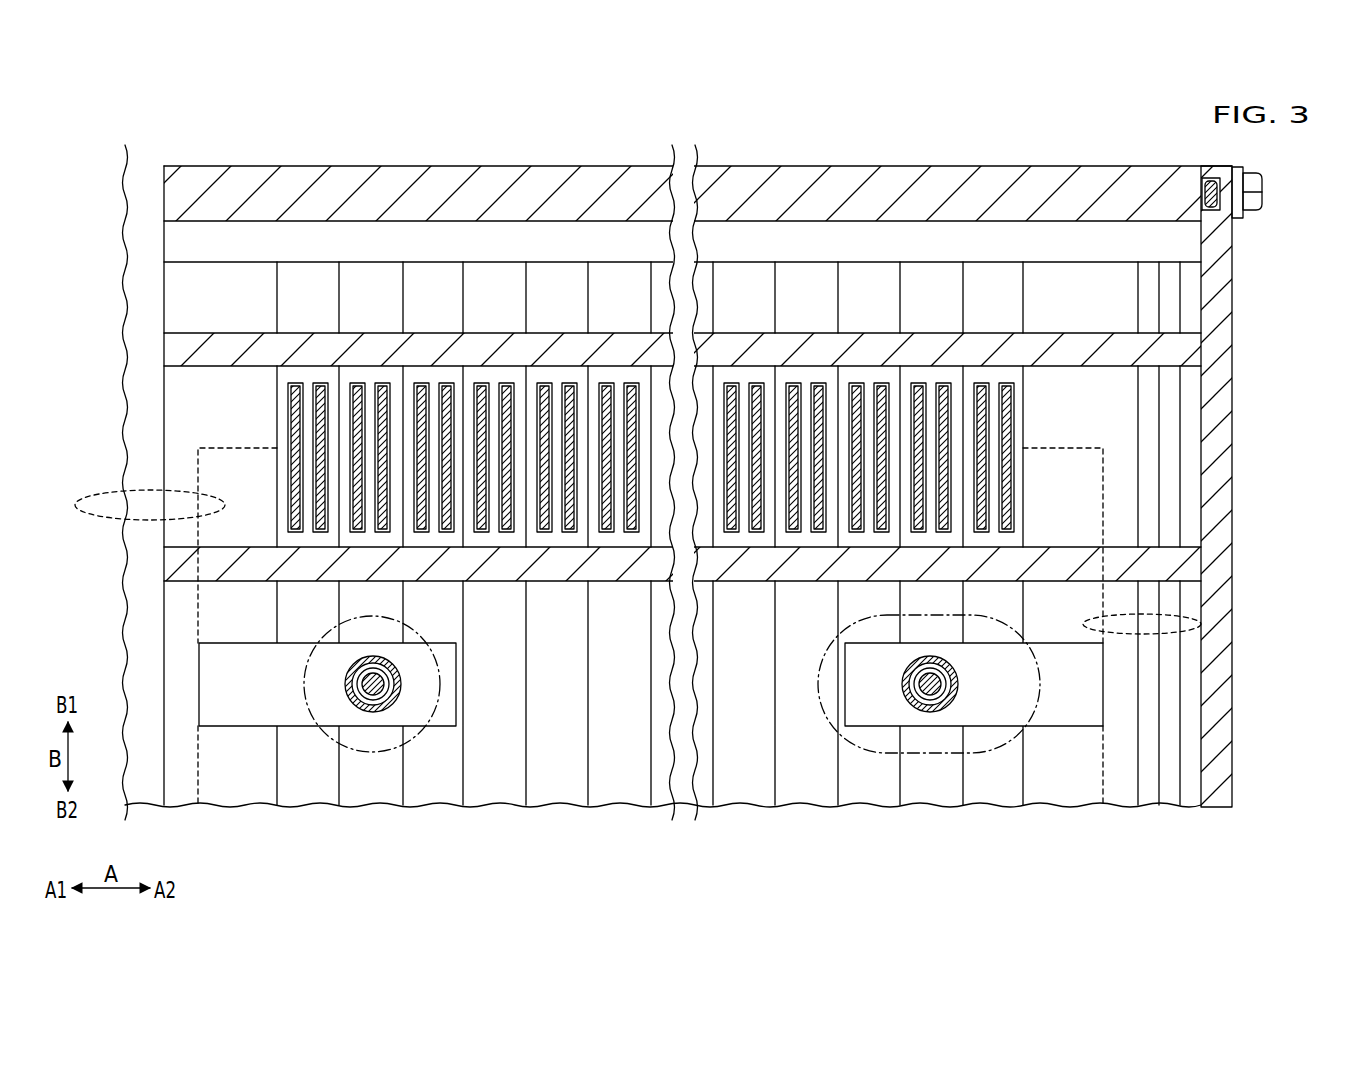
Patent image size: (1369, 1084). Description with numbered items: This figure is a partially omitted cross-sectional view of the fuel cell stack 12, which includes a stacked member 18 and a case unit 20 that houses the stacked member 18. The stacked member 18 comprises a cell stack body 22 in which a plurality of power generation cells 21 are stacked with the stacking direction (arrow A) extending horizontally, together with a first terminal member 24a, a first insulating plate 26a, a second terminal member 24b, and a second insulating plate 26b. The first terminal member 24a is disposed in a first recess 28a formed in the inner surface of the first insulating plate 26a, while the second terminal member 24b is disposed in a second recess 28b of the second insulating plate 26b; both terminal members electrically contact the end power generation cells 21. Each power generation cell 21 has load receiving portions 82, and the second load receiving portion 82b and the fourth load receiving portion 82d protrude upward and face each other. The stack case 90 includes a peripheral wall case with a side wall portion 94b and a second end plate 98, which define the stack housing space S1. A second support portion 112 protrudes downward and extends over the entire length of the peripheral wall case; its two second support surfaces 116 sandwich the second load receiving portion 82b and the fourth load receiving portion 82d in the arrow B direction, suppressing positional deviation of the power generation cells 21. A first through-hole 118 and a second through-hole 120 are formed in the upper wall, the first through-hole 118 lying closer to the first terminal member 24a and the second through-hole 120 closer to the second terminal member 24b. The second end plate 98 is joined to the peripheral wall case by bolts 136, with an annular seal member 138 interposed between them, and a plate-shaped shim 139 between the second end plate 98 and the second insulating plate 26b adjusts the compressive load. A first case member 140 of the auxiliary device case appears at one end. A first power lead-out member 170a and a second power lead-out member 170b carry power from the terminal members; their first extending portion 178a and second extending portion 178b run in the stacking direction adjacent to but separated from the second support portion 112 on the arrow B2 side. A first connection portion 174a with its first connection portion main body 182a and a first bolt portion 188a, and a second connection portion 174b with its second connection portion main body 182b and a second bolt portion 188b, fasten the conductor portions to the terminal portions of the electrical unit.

The fuel cell stack 12 is at (1063, 146).
The stacked member 18 is at (898, 234).
The case unit 20 is at (1259, 685).
The power generation cell 21 is at (625, 790).
The cell stack body 22 is at (801, 258).
The first terminal member 24a is at (198, 470).
The second terminal member 24b is at (1103, 598).
The first insulating plate 26a is at (195, 400).
The second insulating plate 26b is at (1122, 425).
The first recess 28a is at (150, 520).
The second recess 28b is at (1201, 634).
The load receiving portion 82 is at (823, 457).
The second load receiving portion 82b is at (985, 463).
The fourth load receiving portion 82d is at (1012, 477).
The stack case 90 is at (1244, 732).
The side wall portion 94b is at (445, 178).
The second end plate 98 is at (1223, 772).
The second support portion 112 is at (1077, 345).
The second support surface 116 is at (1117, 545).
The first through-hole 118 is at (393, 737).
The second through-hole 120 is at (938, 743).
The bolt 136 is at (1262, 213).
The annular seal member 138 is at (1222, 195).
The shim 139 is at (1188, 403).
The first case member 140 is at (138, 247).
The first power lead-out member 170a is at (442, 735).
The second power lead-out member 170b is at (873, 731).
The first connection portion 174a is at (402, 706).
The second connection portion 174b is at (959, 703).
The first extending portion 178a is at (265, 705).
The second extending portion 178b is at (1057, 715).
The first connection portion main body 182a is at (345, 697).
The second connection portion main body 182b is at (945, 708).
The first bolt portion 188a is at (365, 681).
The second bolt portion 188b is at (945, 683).
The stack housing space S1 is at (300, 240).